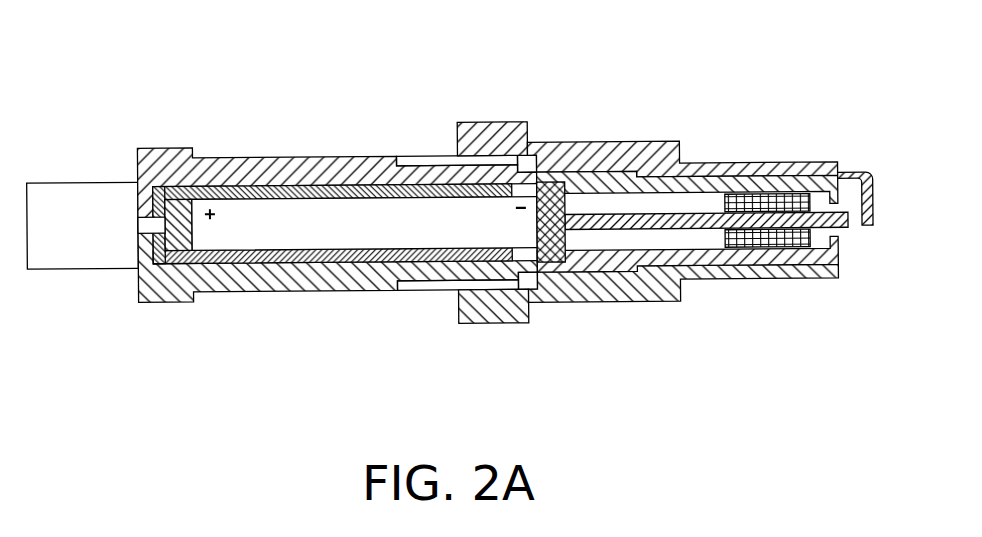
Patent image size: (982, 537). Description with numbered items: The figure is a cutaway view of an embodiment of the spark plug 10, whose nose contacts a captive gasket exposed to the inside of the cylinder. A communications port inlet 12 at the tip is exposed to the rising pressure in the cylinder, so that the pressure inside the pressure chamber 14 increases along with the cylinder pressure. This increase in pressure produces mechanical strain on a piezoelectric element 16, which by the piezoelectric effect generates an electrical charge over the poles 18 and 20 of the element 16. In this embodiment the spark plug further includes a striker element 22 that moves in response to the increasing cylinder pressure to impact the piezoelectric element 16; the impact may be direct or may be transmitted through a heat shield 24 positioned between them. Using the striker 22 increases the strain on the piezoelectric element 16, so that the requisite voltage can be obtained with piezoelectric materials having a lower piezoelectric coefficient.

The spark plug 10 is at (131, 98).
The communications port inlet 12 is at (832, 203).
The pressure chamber 14 is at (682, 202).
The piezoelectric element 16 is at (366, 230).
The pole 18 is at (491, 208).
The pole 20 is at (235, 212).
The striker element 22 is at (770, 237).
The heat shield 24 is at (550, 232).